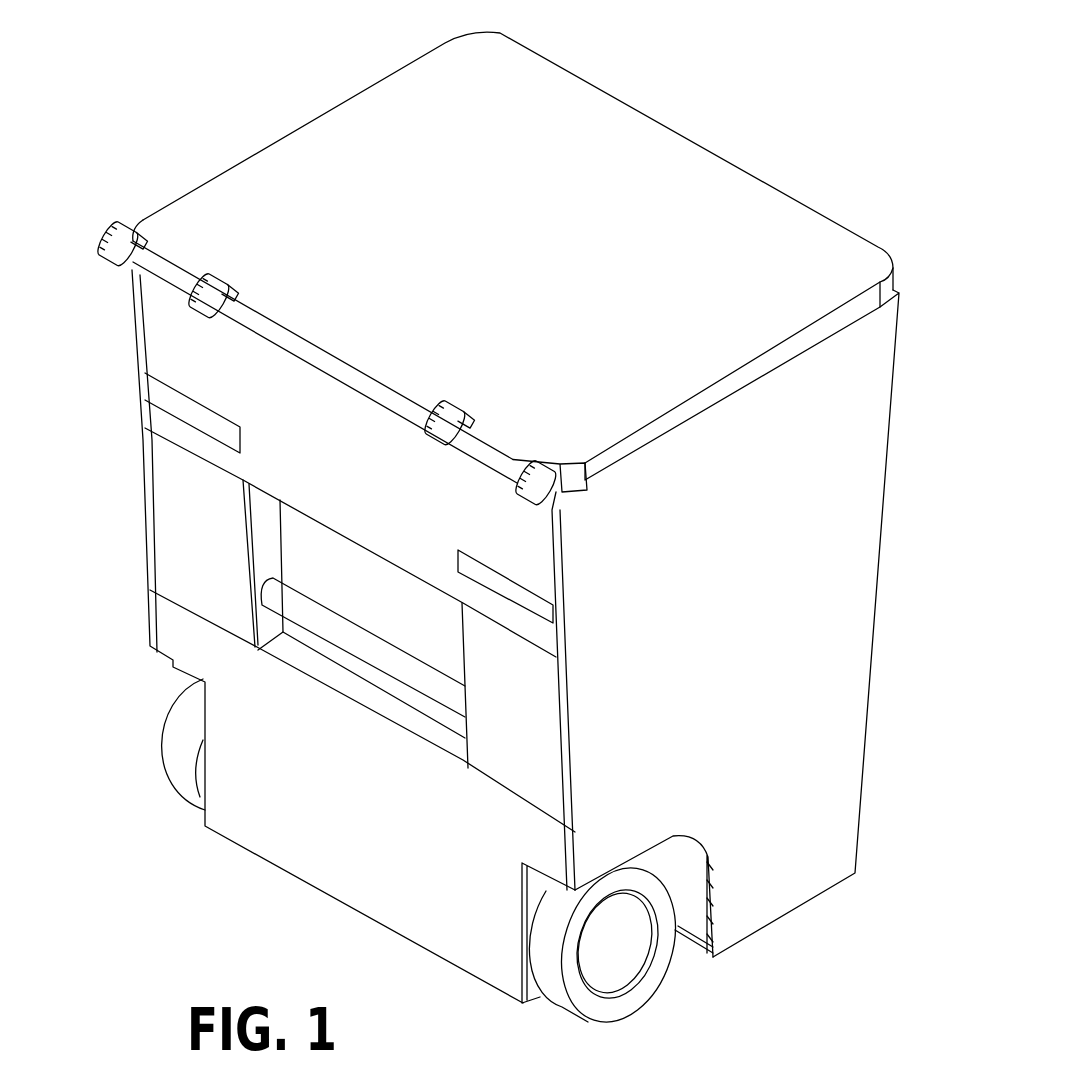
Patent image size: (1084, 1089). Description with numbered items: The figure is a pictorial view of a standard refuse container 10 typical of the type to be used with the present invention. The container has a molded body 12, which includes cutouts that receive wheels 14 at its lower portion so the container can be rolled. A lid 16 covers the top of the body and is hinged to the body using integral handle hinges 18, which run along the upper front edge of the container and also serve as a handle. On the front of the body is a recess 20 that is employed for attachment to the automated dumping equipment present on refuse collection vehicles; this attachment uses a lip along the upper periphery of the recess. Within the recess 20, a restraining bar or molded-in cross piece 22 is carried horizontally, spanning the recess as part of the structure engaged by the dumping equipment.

The refuse container 10 is at (515, 538).
The molded body 12 is at (800, 570).
The wheels 14 is at (613, 947).
The lid 16 is at (612, 197).
The integral handle hinges 18 is at (173, 268).
The recess 20 is at (357, 573).
The restraining bar or molded-in cross piece 22 is at (402, 670).